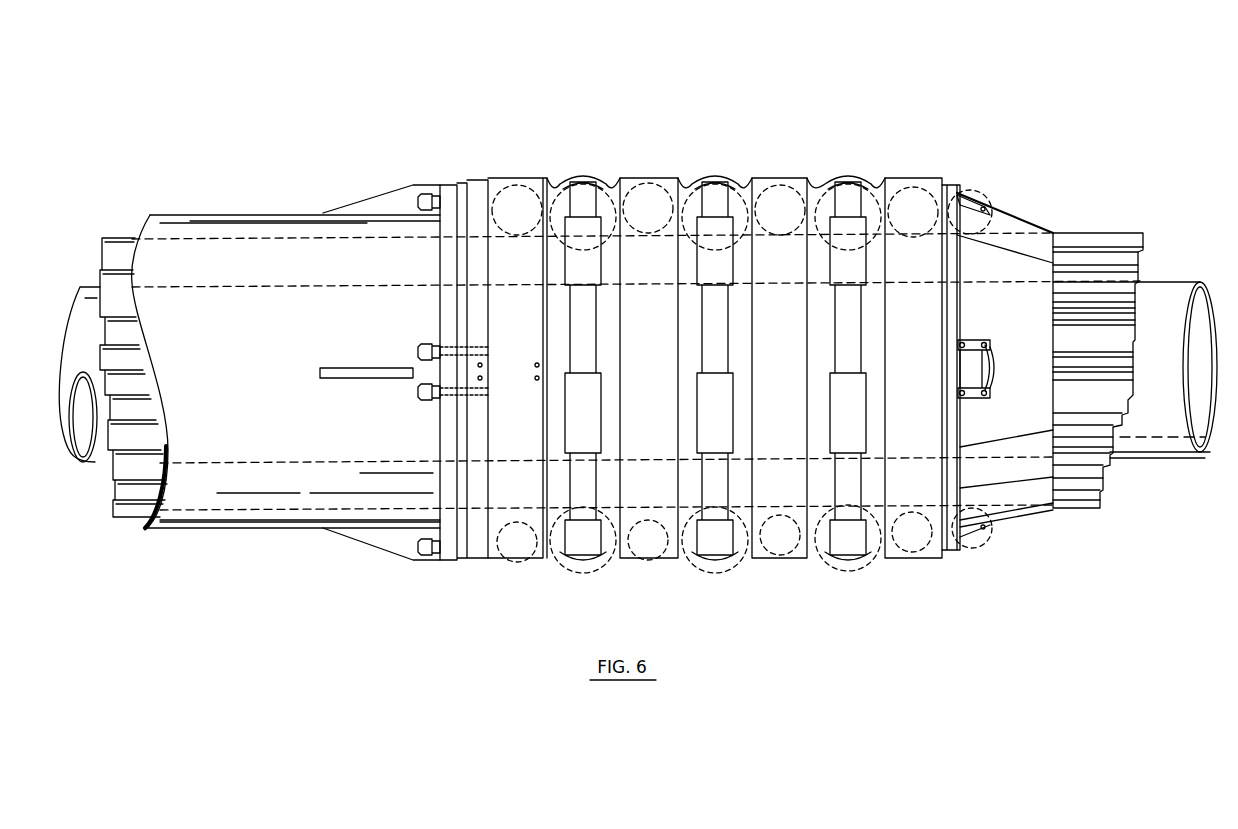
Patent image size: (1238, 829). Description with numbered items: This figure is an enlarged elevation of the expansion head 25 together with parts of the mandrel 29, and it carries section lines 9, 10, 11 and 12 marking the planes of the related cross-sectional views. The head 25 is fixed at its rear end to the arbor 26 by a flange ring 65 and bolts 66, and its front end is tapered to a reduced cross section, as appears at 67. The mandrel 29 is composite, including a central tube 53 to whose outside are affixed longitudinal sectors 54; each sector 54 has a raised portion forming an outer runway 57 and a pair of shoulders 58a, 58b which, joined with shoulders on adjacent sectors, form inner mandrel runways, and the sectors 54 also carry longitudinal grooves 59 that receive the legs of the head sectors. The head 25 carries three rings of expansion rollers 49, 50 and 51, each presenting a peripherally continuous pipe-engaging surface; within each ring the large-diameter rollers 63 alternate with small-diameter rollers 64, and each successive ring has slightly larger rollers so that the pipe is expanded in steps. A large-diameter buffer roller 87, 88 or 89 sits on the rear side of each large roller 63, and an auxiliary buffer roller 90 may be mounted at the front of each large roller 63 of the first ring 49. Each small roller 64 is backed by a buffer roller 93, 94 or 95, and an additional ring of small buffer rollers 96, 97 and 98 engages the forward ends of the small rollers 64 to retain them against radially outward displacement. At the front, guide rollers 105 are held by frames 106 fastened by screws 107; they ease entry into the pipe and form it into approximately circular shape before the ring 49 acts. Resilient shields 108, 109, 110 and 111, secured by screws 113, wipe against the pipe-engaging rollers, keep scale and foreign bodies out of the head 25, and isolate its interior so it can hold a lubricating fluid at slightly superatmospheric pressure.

The section line 9- 9 is at (1075, 130).
The section line 10- 10 is at (910, 133).
The section line 11- 11 is at (848, 133).
The section line 12- 12 is at (968, 482).
The expansion head 25 is at (637, 125).
The arbor 26 is at (252, 216).
The mandrel 29 is at (1186, 246).
The first ring of expansion rollers 49 is at (830, 165).
The second ring of expansion rollers 50 is at (713, 166).
The third ring of expansion rollers 51 is at (580, 166).
The central tube 53 is at (1198, 288).
The longitudinal sectors 54 is at (1143, 252).
The outer runway 57 is at (1098, 233).
The shoulder 58a is at (1135, 380).
The shoulder 58b is at (1135, 362).
The longitudinal grooves 59 is at (1131, 303).
The large-diameter rollers 63 is at (612, 240).
The small-diameter rollers 64 is at (622, 527).
The flange ring 65 is at (447, 185).
The bolts 66 is at (418, 196).
The tapered front end 67 is at (1011, 215).
The large-diameter buffer roller 87 is at (780, 190).
The large-diameter buffer roller 88 is at (650, 190).
The large-diameter buffer roller 89 is at (520, 190).
The auxiliary buffer roller 90 is at (918, 195).
The buffer roller 93 is at (800, 525).
The buffer roller 94 is at (675, 528).
The buffer roller 95 is at (530, 531).
The small buffer roller 96 is at (895, 531).
The small buffer roller 97 is at (757, 527).
The small buffer roller 98 is at (634, 542).
The guide rollers 105 is at (968, 200).
The frames 106 is at (970, 340).
The screws 107 is at (984, 397).
The resilient shield 108 is at (911, 552).
The resilient shield 109 is at (771, 551).
The resilient shield 110 is at (640, 557).
The resilient shield 111 is at (510, 555).
The screws 113 is at (535, 362).